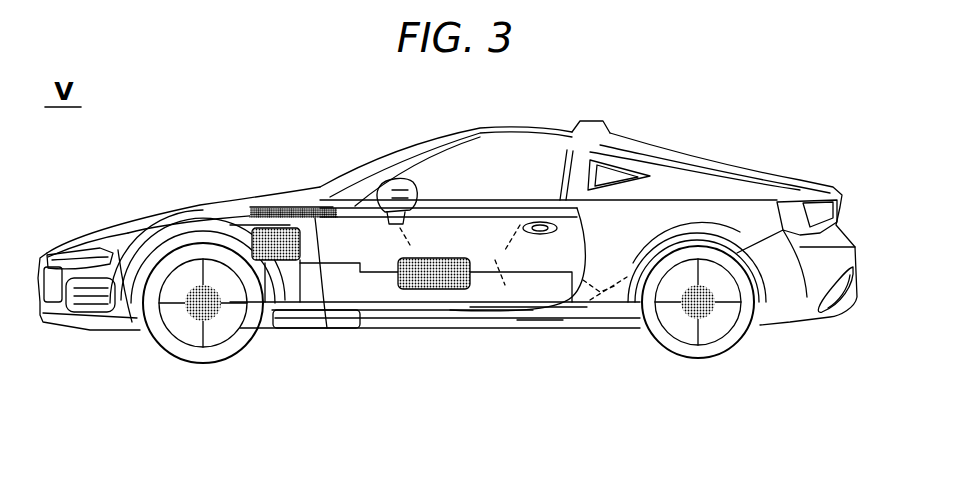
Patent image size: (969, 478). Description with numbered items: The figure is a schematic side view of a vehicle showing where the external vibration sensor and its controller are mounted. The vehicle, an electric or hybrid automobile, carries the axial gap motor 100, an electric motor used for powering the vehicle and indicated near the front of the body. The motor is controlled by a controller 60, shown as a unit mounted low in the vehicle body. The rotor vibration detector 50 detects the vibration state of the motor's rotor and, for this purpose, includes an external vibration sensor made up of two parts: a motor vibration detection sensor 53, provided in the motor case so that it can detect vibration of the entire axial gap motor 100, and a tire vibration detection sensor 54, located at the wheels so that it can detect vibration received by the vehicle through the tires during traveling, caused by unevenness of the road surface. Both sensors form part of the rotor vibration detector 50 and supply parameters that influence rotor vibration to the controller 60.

The axial gap motor 100 is at (246, 229).
The rotor vibration detector 50 is at (450, 280).
The motor vibration detection sensor 53 is at (302, 246).
The tire vibration detection sensor 54 is at (212, 308).
The controller 60 is at (415, 290).